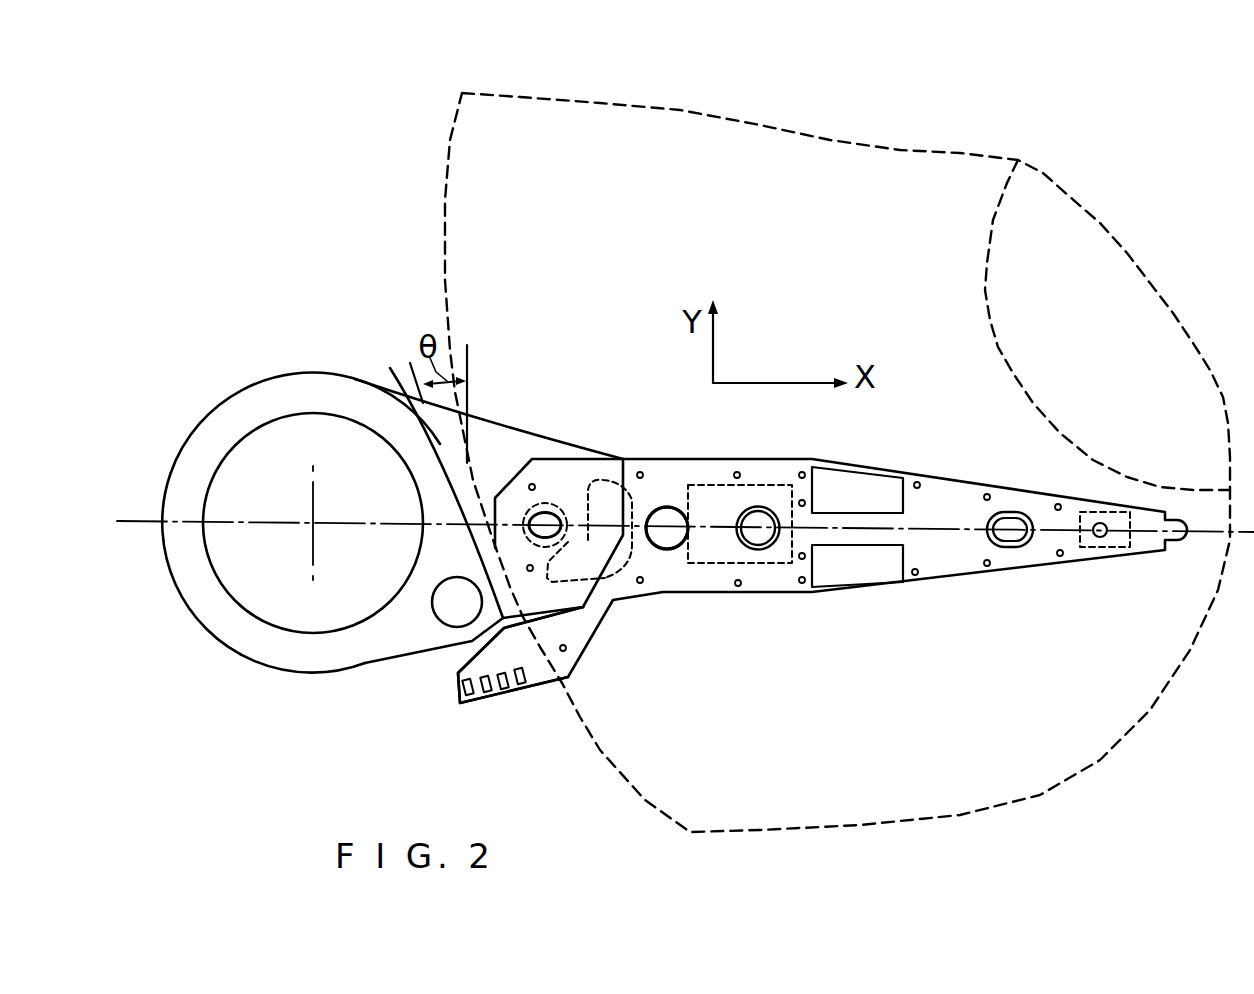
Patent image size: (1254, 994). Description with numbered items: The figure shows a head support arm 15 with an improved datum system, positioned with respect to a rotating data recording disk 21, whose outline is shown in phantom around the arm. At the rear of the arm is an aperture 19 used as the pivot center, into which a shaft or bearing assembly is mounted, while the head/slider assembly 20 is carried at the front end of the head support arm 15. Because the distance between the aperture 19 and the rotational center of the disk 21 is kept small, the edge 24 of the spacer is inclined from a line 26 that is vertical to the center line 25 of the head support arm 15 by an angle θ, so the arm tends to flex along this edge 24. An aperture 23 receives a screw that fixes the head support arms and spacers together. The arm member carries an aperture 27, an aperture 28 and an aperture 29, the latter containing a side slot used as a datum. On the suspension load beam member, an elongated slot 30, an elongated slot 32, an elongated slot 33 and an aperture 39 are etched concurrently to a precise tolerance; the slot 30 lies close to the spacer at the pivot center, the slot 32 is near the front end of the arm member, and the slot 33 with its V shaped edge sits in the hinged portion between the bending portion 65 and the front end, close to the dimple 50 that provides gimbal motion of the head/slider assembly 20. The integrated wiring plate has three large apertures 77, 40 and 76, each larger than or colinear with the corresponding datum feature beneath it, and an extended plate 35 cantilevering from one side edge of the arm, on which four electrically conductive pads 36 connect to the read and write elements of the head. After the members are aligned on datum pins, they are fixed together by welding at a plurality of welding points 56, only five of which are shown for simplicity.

The head support arm 15 is at (313, 299).
The aperture 19 is at (233, 598).
The head/slider assembly 20 is at (1103, 538).
The rotating data recording disk 21 is at (450, 158).
The aperture 23 is at (447, 627).
The edge of the spacer 24 is at (489, 497).
The center line 25 is at (155, 523).
The line 26 is at (467, 373).
The aperture 27 is at (566, 507).
The aperture 28 is at (636, 496).
The aperture 29 is at (763, 484).
The elongated slot 30 is at (549, 510).
The elongated slot 32 is at (757, 550).
The elongated slot 33 is at (1011, 516).
The extended plate 35 is at (546, 684).
The electrically conductive pads 36 is at (513, 690).
The aperture 39 is at (667, 528).
The aperture 40 is at (765, 510).
The dimple 50 is at (1104, 524).
The welding points 56 is at (532, 483).
The bending portion 65 is at (812, 608).
The aperture 76 is at (1008, 548).
The aperture 77 is at (668, 549).